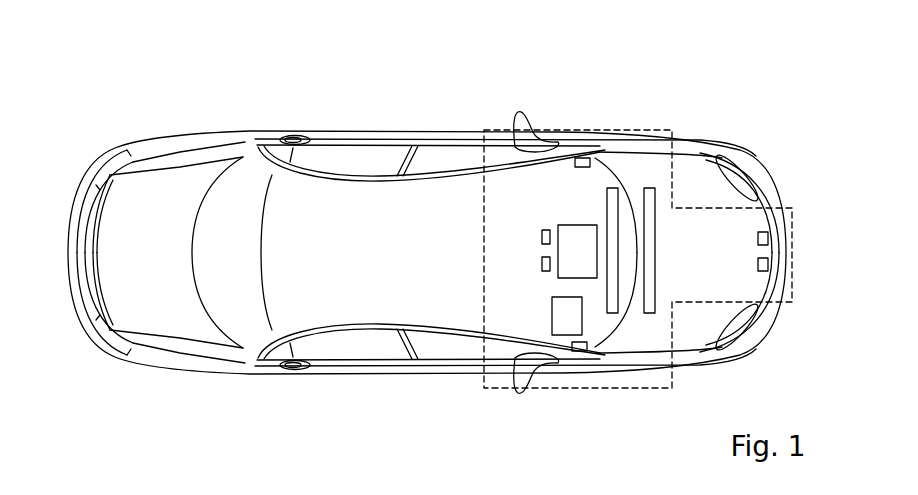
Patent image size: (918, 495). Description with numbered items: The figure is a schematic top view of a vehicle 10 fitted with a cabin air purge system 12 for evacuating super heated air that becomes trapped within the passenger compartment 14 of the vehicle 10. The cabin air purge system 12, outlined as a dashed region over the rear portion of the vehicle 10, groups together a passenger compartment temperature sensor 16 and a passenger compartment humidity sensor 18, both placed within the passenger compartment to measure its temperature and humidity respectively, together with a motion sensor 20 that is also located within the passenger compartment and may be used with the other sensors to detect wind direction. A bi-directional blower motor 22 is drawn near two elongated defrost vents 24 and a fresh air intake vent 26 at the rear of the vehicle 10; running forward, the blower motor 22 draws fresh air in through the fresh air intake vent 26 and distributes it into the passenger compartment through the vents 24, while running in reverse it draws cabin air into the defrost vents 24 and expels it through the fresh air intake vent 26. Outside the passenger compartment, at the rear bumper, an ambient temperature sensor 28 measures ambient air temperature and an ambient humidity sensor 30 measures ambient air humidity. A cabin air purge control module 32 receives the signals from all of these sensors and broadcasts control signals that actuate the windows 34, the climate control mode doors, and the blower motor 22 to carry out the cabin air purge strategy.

The vehicle 10 is at (730, 144).
The cabin air purge system 12 is at (640, 392).
The passenger compartment 14 is at (295, 204).
The passenger compartment temperature sensor 16 is at (541, 237).
The passenger compartment humidity sensor 18 is at (541, 267).
The motion sensor 20 is at (584, 157).
The bi-directional blower motor 22 is at (558, 338).
The defrost vents 24 is at (614, 190).
The fresh air intake vent 26 is at (657, 306).
The ambient temperature sensor 28 is at (757, 237).
The ambient humidity sensor 30 is at (757, 264).
The cabin air purge control module 32 is at (577, 225).
The windows 34 is at (353, 162).